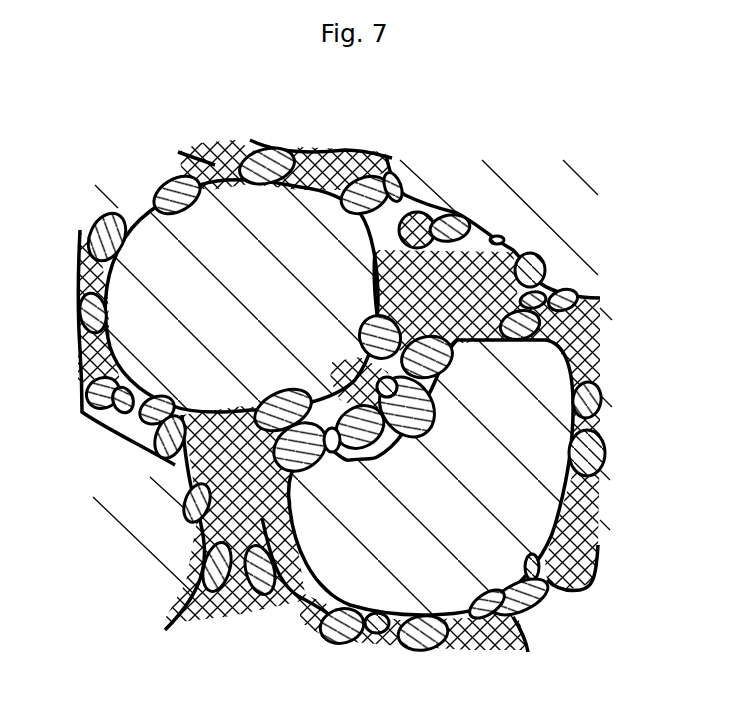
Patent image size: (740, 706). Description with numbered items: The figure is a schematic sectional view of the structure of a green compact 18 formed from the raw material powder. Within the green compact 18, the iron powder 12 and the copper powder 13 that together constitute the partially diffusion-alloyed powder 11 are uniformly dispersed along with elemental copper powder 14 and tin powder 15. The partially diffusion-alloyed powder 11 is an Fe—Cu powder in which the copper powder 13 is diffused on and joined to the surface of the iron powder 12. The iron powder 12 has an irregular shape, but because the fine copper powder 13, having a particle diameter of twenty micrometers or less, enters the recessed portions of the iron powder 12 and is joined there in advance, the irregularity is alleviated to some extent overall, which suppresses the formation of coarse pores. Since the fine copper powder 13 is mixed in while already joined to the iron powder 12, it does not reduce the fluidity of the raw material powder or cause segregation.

The partially diffusion-alloyed powder 11 is at (307, 230).
The iron powder 12 is at (214, 224).
The copper powder 13 is at (270, 407).
The elemental copper powder 14 is at (459, 320).
The tin powder 15 is at (265, 458).
The green compact 18 is at (645, 186).